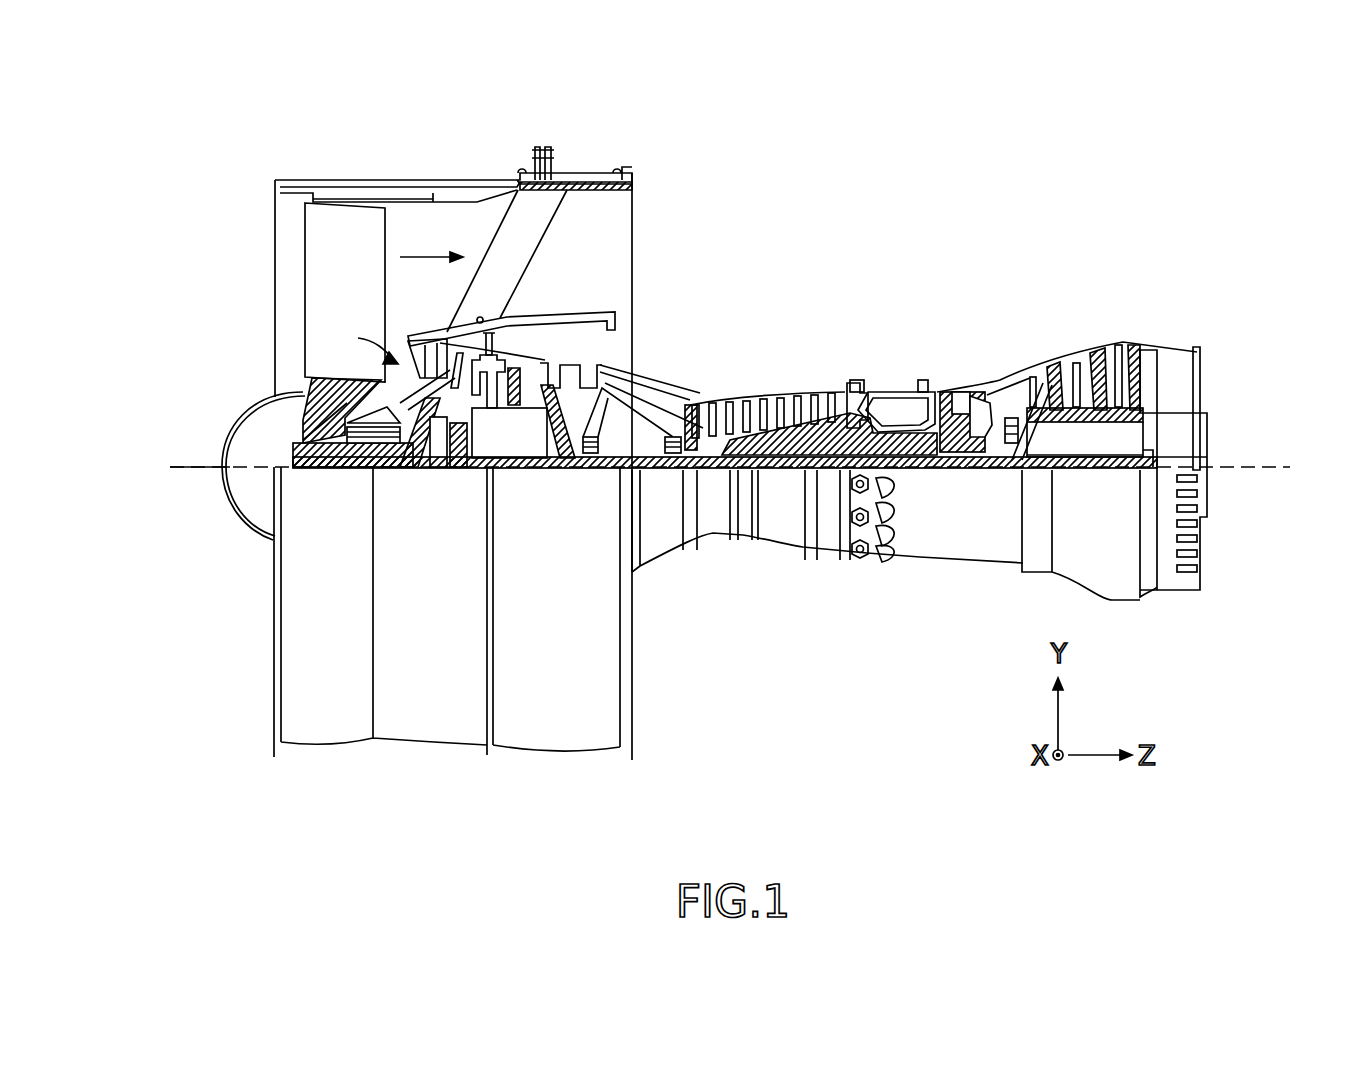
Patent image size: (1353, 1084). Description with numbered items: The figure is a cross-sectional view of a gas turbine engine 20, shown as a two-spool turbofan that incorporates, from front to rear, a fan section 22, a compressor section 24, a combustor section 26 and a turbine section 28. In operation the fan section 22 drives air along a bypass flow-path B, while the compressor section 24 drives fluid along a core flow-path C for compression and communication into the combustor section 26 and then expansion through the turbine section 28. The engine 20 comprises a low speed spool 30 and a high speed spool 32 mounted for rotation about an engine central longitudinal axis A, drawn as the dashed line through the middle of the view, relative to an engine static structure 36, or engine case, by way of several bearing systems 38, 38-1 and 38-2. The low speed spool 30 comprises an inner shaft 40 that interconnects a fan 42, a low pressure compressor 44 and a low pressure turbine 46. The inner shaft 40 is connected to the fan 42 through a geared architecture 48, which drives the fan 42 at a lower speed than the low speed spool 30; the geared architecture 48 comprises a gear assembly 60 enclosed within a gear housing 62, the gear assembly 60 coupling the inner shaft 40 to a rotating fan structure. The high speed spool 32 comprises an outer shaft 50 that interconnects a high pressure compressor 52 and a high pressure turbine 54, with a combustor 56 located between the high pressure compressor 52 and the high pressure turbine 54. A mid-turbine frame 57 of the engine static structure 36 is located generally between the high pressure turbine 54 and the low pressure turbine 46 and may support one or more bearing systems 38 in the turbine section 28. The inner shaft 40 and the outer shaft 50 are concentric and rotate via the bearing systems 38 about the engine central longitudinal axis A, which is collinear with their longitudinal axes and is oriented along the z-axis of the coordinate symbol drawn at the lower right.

The gas turbine engine 20 is at (952, 170).
The fan section 22 is at (475, 170).
The compressor section 24 is at (505, 280).
The combustor section 26 is at (950, 280).
The turbine section 28 is at (1145, 280).
The low speed spool 30 is at (790, 483).
The high speed spool 32 is at (833, 427).
The engine static structure 36 is at (248, 777).
The bearing system 38 is at (1003, 470).
The bearing system 38-1 is at (352, 446).
The bearing system 38-2 is at (580, 458).
The inner shaft 40 is at (652, 470).
The fan 42 is at (346, 309).
The low pressure compressor 44 is at (572, 370).
The low pressure turbine 46 is at (1087, 347).
The geared architecture 48 is at (448, 490).
The outer shaft 50 is at (910, 468).
The high pressure compressor 52 is at (802, 428).
The high pressure turbine 54 is at (962, 393).
The combustor 56 is at (900, 405).
The mid-turbine frame 57 is at (1000, 382).
The gear assembly 60 is at (473, 433).
The gear housing 62 is at (473, 413).
The engine central longitudinal axis A is at (207, 462).
The bypass flow-path B is at (428, 263).
The core flow-path C is at (366, 346).